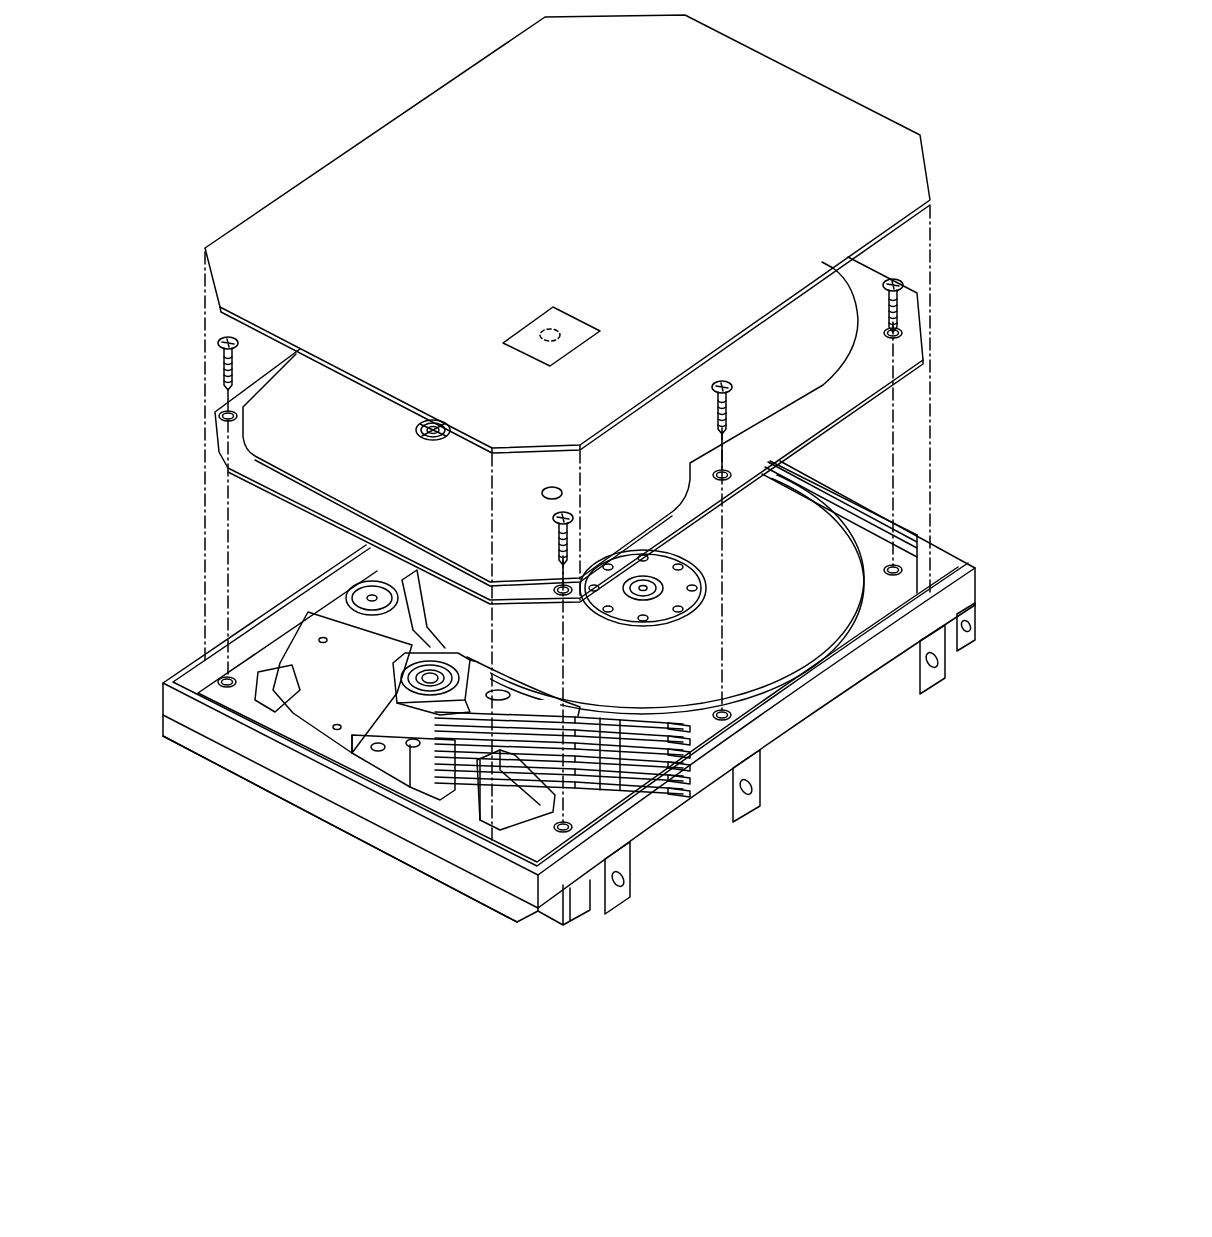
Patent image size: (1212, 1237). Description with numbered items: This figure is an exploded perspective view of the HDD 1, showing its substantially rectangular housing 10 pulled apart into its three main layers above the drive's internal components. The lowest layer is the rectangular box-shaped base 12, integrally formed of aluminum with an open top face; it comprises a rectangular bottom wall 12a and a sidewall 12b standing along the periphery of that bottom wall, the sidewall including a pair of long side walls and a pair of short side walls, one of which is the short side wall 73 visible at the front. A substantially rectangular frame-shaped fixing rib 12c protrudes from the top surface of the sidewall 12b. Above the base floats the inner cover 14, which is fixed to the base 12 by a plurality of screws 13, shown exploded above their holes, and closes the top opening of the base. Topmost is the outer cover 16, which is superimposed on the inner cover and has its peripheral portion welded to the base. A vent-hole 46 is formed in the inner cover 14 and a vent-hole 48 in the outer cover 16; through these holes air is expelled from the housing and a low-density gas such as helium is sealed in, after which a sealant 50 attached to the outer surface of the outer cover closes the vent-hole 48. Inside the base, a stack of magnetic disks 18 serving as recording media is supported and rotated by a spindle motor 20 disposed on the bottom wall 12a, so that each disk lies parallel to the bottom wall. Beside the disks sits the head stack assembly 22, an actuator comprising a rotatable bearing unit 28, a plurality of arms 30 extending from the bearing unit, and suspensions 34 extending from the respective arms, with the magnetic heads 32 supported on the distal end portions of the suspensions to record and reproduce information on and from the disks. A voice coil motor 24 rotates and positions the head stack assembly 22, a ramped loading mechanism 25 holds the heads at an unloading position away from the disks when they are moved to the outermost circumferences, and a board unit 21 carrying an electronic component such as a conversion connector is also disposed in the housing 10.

The HDD 1 is at (866, 66).
The housing 10 is at (255, 151).
The base 12 is at (793, 762).
The bottom wall 12a is at (593, 803).
The sidewall 12b is at (703, 822).
The fixing rib 12c is at (277, 607).
The screws 13 is at (220, 338).
The inner cover 14 is at (810, 383).
The outer cover 16 is at (737, 68).
The magnetic disks 18 is at (800, 648).
The spindle motor 20 is at (683, 570).
The board unit 21 is at (523, 807).
The head stack assembly 22 is at (523, 680).
The voice coil motor 24 is at (328, 712).
The ramped loading mechanism 25 is at (698, 703).
The bearing unit 28 is at (435, 663).
The arms 30 is at (573, 683).
The magnetic heads 32 is at (668, 727).
The suspensions 34 is at (638, 723).
The vent-hole 46 is at (547, 500).
The vent-hole 48 is at (550, 341).
The sealant 50 is at (577, 313).
The short side wall 73 is at (398, 843).